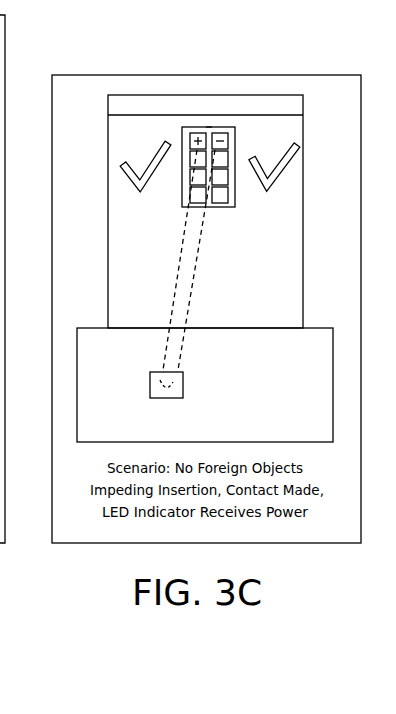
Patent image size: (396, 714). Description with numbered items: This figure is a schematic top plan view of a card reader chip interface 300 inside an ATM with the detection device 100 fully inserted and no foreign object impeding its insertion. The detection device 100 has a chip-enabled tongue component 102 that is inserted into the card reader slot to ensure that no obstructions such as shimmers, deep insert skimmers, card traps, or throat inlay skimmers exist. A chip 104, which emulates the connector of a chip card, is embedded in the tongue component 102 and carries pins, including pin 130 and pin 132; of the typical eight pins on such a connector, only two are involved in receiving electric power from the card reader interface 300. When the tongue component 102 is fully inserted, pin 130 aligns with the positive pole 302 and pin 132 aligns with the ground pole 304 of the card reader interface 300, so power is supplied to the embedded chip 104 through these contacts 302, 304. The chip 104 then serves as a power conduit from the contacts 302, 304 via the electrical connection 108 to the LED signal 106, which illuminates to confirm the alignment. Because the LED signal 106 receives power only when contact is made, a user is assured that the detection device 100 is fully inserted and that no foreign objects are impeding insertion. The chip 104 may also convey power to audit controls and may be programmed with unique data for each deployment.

The detection device 100 is at (86, 283).
The chip-enabled tongue component 102 is at (235, 271).
The chip 104 is at (236, 150).
The LED signal 106 is at (156, 372).
The electrical connection 108 is at (200, 240).
The pin 130 is at (188, 140).
The pin 132 is at (228, 139).
The card reader chip interface 300 is at (210, 128).
The positive pole 302 is at (196, 138).
The ground pole 304 is at (221, 137).